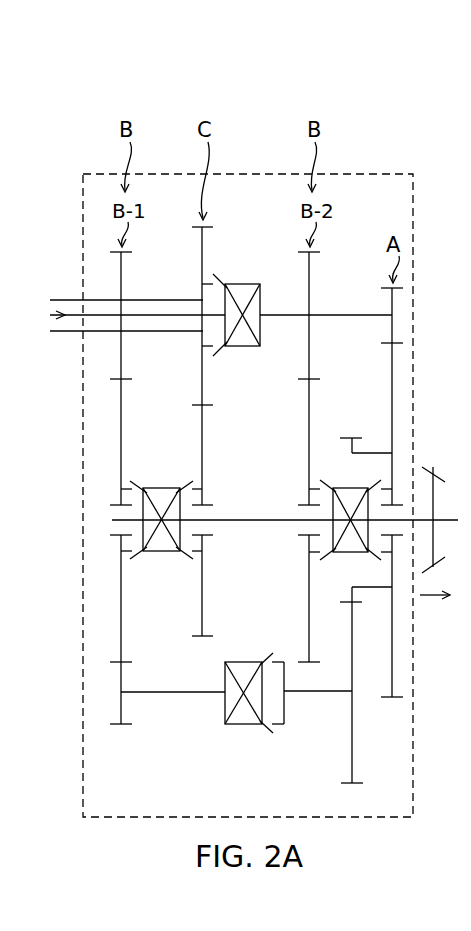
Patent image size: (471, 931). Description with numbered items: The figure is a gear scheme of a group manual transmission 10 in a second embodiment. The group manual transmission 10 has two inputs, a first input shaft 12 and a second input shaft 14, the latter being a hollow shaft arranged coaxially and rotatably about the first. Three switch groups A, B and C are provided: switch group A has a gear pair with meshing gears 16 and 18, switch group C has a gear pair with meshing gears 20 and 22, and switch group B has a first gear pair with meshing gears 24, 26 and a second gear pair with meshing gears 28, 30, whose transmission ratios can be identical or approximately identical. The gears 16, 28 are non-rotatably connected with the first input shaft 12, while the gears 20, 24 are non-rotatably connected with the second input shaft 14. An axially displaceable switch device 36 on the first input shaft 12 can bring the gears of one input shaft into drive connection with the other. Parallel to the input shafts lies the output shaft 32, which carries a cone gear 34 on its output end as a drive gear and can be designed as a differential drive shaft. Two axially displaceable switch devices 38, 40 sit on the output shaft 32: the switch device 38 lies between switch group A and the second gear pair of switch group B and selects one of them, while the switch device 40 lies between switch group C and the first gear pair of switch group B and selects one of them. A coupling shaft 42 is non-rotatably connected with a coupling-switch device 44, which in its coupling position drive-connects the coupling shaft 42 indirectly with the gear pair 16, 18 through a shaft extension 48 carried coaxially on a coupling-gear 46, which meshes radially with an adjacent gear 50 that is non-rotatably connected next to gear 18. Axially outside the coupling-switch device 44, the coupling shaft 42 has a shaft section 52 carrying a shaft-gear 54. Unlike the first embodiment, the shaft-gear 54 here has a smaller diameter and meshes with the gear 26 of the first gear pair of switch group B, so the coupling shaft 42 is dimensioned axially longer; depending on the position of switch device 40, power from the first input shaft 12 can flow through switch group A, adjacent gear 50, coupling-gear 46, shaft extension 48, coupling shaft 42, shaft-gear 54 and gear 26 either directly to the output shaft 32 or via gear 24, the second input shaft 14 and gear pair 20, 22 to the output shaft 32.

The group manual transmission 10 is at (260, 92).
The first input shaft 12 is at (72, 318).
The second input shaft 14 is at (72, 298).
The gear 16 is at (392, 304).
The gear 18 is at (392, 363).
The gear 20 is at (202, 250).
The gear 22 is at (202, 425).
The gear 24 is at (121, 276).
The gear 26 is at (121, 410).
The gear 28 is at (309, 278).
The gear 30 is at (309, 406).
The output shaft 32 is at (407, 520).
The cone gear 34 is at (433, 465).
The switch device 36 is at (248, 348).
The switch device 38 is at (344, 487).
The switch device 40 is at (175, 553).
The coupling shaft 42 is at (214, 702).
The coupling-switch device 44 is at (250, 726).
The coupling-gear 46 is at (352, 757).
The shaft extension 48 is at (307, 693).
The adjacent gear 50 is at (352, 595).
The shaft section 52 is at (121, 694).
The shaft-gear 54 is at (121, 678).